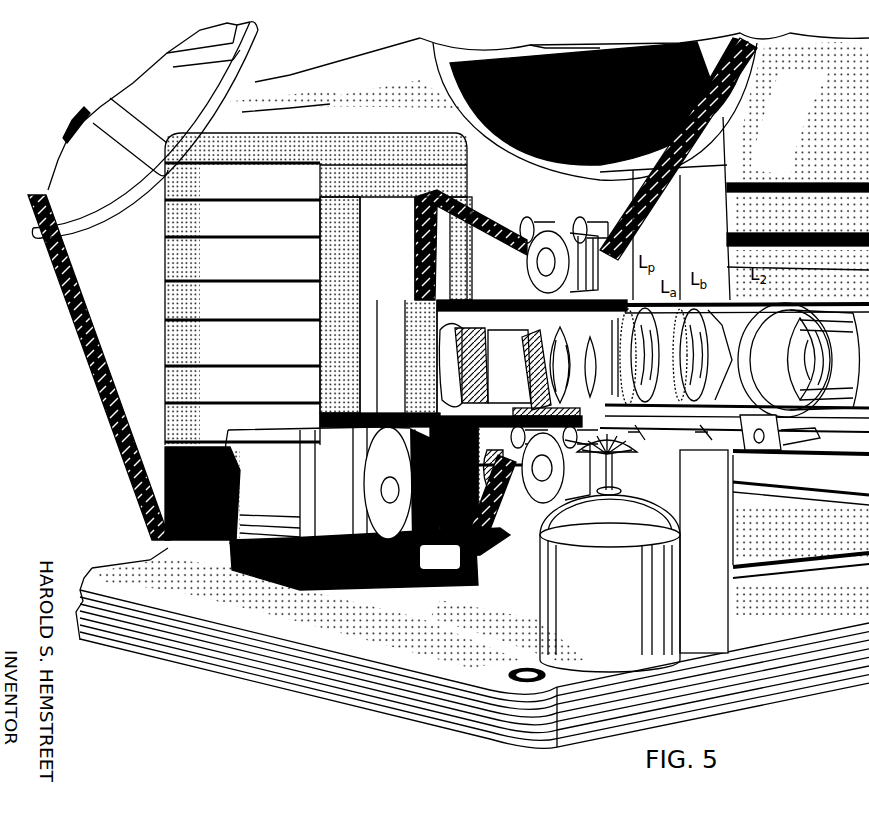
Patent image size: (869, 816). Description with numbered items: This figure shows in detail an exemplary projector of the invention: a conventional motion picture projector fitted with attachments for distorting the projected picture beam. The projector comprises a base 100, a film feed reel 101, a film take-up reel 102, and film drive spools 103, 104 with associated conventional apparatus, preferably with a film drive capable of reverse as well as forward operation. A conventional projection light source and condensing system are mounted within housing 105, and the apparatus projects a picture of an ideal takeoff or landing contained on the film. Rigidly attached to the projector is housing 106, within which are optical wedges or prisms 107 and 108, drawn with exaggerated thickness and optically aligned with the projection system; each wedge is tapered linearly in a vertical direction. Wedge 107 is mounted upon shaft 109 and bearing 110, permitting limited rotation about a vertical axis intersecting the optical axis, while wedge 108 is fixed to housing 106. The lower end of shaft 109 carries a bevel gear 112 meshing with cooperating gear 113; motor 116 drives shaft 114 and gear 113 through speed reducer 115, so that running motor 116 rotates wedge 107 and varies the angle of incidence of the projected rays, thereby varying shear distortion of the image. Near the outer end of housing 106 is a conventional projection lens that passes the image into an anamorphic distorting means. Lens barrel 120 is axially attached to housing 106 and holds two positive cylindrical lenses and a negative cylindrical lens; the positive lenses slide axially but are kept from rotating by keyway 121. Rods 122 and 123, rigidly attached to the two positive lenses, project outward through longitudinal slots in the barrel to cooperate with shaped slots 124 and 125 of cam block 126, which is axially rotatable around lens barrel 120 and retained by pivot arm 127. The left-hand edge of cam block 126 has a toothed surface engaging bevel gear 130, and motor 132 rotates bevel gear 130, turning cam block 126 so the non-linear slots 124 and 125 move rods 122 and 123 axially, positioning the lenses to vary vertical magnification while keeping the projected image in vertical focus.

The base 100 is at (312, 681).
The film feed reel 101 is at (538, 68).
The film take-up reel 102 is at (117, 104).
The film drive spool 103 is at (559, 242).
The film drive spool 104 is at (541, 490).
The housing 105 is at (247, 230).
The housing 106 is at (617, 314).
The optical wedge 107 is at (538, 348).
The optical wedge 108 is at (486, 357).
The shaft 109 is at (535, 374).
The bearing 110 is at (508, 302).
The bevel gear 112 is at (395, 440).
The gear 113 is at (370, 559).
The shaft 114 is at (400, 464).
The speed reducer 115 is at (350, 520).
The motor 116 is at (268, 476).
The lens barrel 120 is at (650, 300).
The keyway 121 is at (692, 300).
The rod 122 is at (686, 450).
The rod 123 is at (755, 440).
The shaped slot 124 is at (648, 420).
The shaped slot 125 is at (710, 420).
The cam block 126 is at (784, 433).
The pivot arm 127 is at (818, 432).
The bevel gear 130 is at (624, 456).
The motor 132 is at (613, 635).